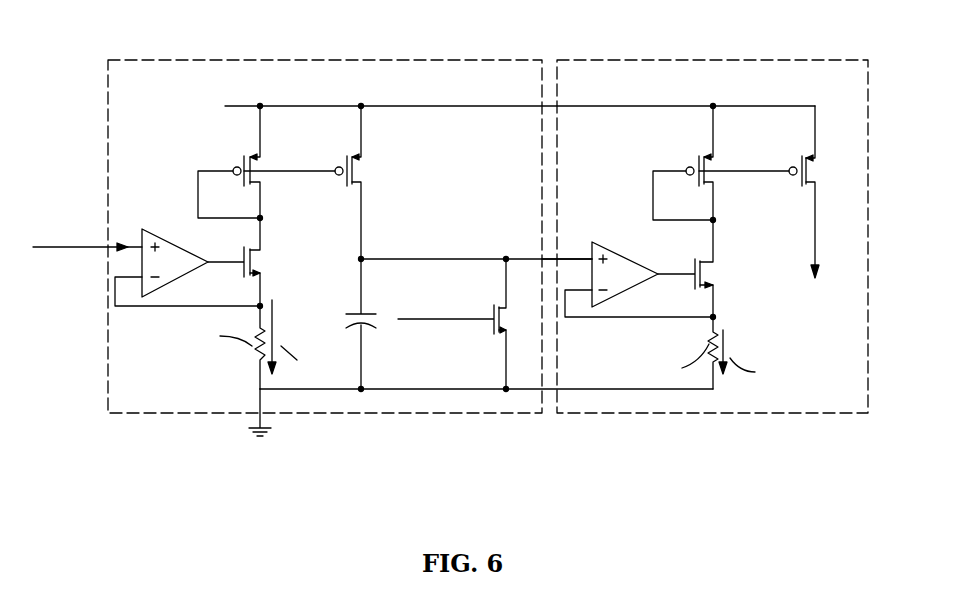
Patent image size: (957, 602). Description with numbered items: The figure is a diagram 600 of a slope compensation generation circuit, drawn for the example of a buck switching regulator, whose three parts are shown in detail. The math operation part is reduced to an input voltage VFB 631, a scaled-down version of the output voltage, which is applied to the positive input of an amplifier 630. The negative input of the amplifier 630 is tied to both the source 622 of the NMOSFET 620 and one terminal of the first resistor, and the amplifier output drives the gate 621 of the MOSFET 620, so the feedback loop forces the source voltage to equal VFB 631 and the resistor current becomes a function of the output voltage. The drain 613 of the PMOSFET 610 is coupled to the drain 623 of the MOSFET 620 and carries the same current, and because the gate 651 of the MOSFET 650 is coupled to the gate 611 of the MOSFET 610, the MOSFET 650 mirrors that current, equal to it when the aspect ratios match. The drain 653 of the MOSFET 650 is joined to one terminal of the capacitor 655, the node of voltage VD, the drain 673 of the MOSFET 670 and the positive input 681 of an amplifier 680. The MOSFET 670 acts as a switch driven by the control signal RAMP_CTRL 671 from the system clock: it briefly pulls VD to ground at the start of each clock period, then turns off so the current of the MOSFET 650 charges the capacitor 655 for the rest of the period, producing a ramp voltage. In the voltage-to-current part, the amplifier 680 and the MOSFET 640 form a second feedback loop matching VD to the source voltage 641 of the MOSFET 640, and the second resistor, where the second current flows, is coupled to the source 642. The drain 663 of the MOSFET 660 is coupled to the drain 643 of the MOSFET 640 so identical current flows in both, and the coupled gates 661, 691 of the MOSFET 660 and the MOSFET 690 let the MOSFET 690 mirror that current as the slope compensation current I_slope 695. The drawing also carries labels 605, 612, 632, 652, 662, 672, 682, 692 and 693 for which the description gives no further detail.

The diagram 600 is at (129, 36).
The supply voltage rail VDD 605 is at (260, 104).
The PMOSFET 610 is at (258, 162).
The gate of MOSFET 610 611 is at (237, 178).
The drain of transistor 610 612 is at (264, 161).
The drain of MOSFET 610 613 is at (268, 173).
The NMOSFET 620 is at (368, 38).
The gate of MOSFET 620 621 is at (242, 256).
The source of MOSFET 620 622 is at (250, 283).
The drain of MOSFET 620 623 is at (262, 252).
The amplifier 630 is at (146, 251).
The input voltage VFB 631 is at (97, 240).
The inverting input of amplifier 630 632 is at (108, 279).
The MOSFET 640 is at (713, 269).
The source voltage of MOSFET 640 641 is at (694, 272).
The source of MOSFET 640 642 is at (718, 292).
The drain of MOSFET 640 643 is at (718, 265).
The MOSFET 650 is at (379, 182).
The gate of MOSFET 650 651 is at (338, 186).
The drain of transistor 650 652 is at (358, 158).
The drain of MOSFET 650 653 is at (368, 184).
The capacitor 655 is at (356, 310).
The MOSFET 660 is at (721, 163).
The gate of MOSFET 660 661 is at (694, 178).
The drain of transistor 660 662 is at (722, 135).
The drain of MOSFET 660 663 is at (722, 199).
The MOSFET 670 is at (464, 324).
The control signal RAMP_CTRL 671 is at (490, 312).
The source of transistor 670 672 is at (512, 334).
The drain of MOSFET 670 673 is at (500, 305).
The amplifier 680 is at (627, 269).
The positive input of amplifier 680 681 is at (587, 254).
The inverting input of amplifier 680 682 is at (592, 290).
The MOSFET 690 is at (811, 202).
The gate of MOSFET 690 691 is at (788, 166).
The drain of transistor 690 692 is at (824, 160).
The source of transistor 690 693 is at (822, 189).
The slope compensation current I_slope 695 is at (812, 257).